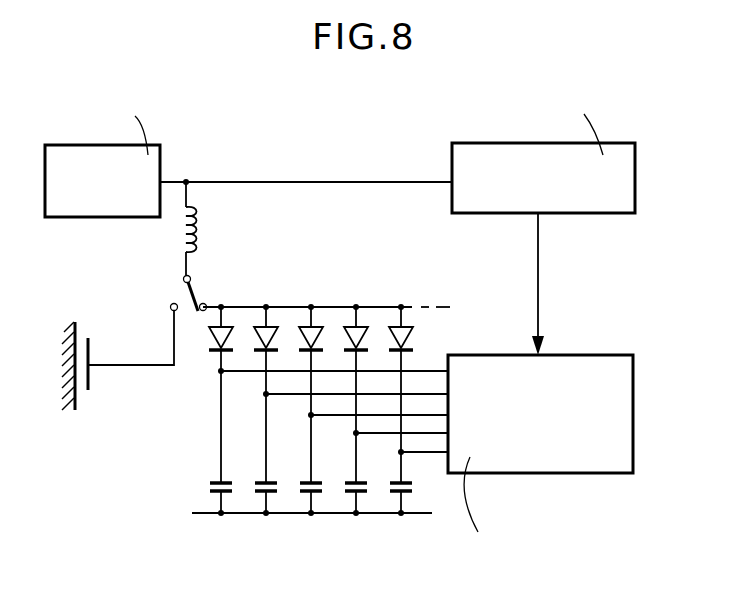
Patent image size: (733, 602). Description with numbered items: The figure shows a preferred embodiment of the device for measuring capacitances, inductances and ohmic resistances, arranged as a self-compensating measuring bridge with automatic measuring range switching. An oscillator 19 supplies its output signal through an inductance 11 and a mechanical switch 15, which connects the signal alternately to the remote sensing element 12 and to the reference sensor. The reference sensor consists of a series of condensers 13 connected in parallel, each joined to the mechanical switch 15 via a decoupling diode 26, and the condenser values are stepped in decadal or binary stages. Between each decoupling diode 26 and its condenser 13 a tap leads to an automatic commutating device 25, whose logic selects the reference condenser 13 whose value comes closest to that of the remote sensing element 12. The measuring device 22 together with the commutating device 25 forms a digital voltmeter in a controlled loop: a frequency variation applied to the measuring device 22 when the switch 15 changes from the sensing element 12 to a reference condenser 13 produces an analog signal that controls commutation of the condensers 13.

The oscillator 19 is at (108, 181).
The inductance 11 is at (195, 248).
The mechanical switch 15 is at (199, 300).
The remote sensing element 12 is at (90, 378).
The decoupling diode 26 is at (420, 335).
The reference sensor condensers 13 is at (203, 484).
The measuring device 22 is at (595, 193).
The automatic commutating device 25 is at (558, 450).